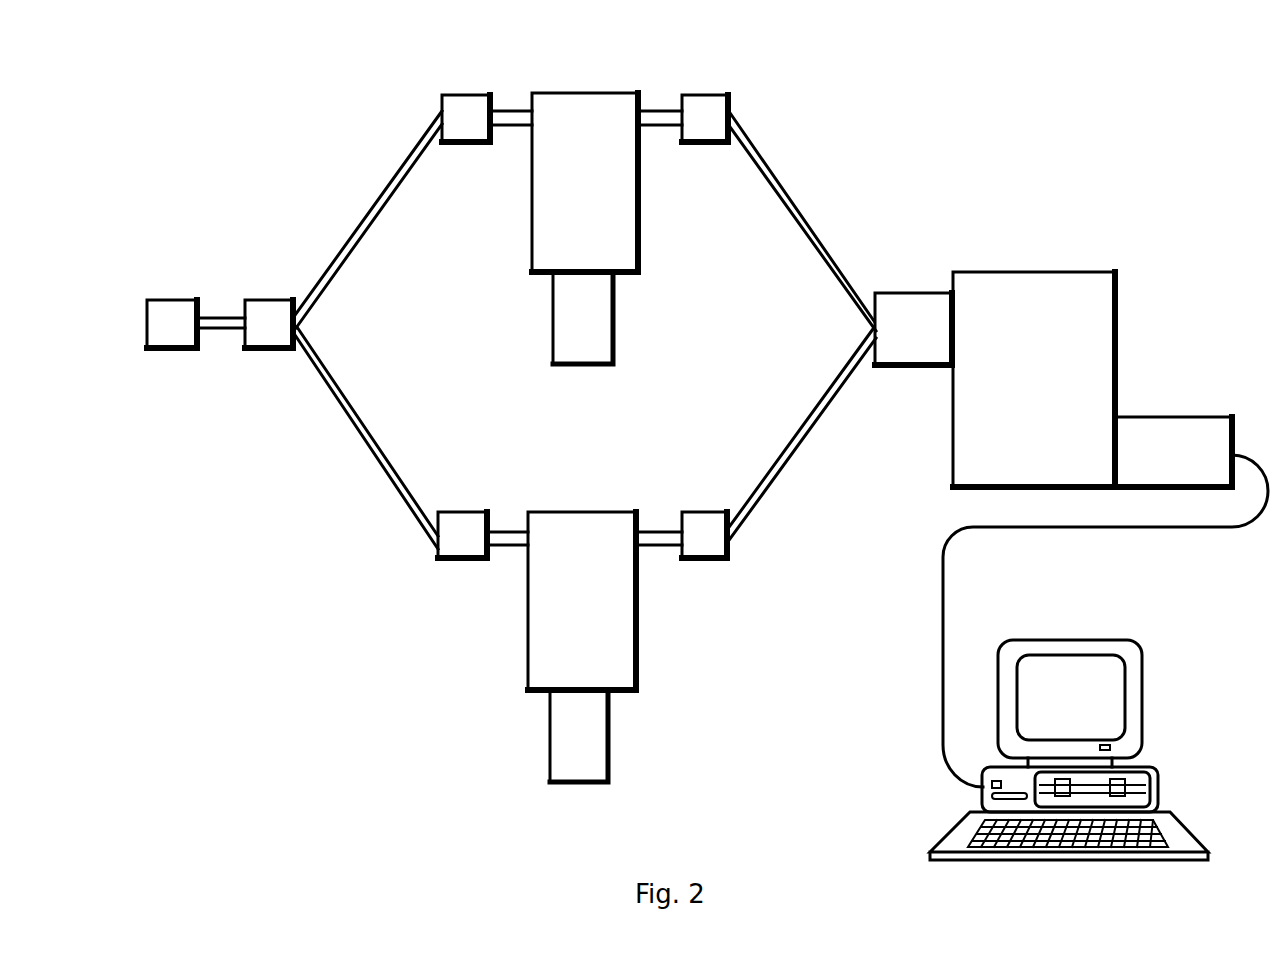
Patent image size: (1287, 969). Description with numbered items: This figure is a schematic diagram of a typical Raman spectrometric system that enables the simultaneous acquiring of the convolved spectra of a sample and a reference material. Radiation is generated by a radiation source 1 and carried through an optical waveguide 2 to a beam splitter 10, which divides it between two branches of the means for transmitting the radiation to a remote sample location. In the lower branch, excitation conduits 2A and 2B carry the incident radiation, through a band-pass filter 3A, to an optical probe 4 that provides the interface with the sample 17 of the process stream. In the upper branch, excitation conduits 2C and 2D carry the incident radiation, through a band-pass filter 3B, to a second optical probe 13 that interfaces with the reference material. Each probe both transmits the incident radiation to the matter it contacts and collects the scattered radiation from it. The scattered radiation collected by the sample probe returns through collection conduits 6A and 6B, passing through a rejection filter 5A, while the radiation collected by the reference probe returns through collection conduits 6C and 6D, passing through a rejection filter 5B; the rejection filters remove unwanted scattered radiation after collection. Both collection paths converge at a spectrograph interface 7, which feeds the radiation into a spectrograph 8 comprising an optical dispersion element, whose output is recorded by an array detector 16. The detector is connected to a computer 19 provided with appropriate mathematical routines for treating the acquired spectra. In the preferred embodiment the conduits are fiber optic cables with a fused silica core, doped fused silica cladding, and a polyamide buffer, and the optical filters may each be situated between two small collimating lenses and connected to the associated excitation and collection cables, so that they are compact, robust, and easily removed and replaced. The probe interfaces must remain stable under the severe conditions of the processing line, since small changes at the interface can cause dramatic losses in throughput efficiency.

The radiation source 1 is at (170, 350).
The optical waveguide 2 is at (222, 317).
The excitation conduit 2A is at (358, 435).
The excitation conduit 2B is at (510, 530).
The excitation conduit 2C is at (394, 190).
The excitation conduit 2D is at (508, 111).
The band-pass filter 3A is at (474, 560).
The band-pass filter 3B is at (472, 110).
The optical probe 4 is at (585, 623).
The rejection filter 5A is at (722, 560).
The rejection filter 5B is at (738, 100).
The collection conduit 6A is at (665, 530).
The collection conduit 6B is at (795, 452).
The collection conduit 6C is at (662, 111).
The collection conduit 6D is at (800, 232).
The spectrograph interface 7 is at (922, 292).
The spectrograph 8 is at (1117, 290).
The beam splitter 10 is at (284, 298).
The optical probe 13 is at (600, 196).
The array detector 16 is at (1205, 417).
The sample 17 is at (582, 785).
The computer 19 is at (1158, 783).